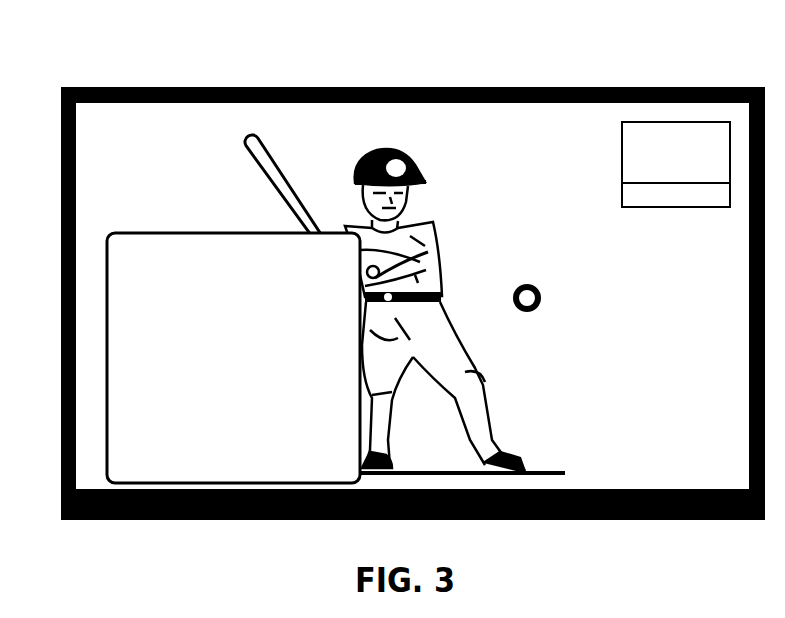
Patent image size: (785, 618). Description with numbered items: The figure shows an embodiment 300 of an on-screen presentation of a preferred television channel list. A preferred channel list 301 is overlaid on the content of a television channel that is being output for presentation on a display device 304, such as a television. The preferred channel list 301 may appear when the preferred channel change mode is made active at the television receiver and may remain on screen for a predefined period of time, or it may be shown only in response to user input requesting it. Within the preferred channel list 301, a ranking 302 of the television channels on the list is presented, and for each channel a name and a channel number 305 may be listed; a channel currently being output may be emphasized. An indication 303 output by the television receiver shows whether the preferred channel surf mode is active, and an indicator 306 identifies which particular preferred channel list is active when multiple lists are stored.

The embodiment of on-screen presentation 300 is at (396, 267).
The display device 304 is at (217, 87).
The preferred channel list 301 is at (151, 233).
The ranking 302 is at (122, 309).
The indication 303 is at (123, 436).
The channel number 305 is at (266, 273).
The indicator 306 is at (116, 461).